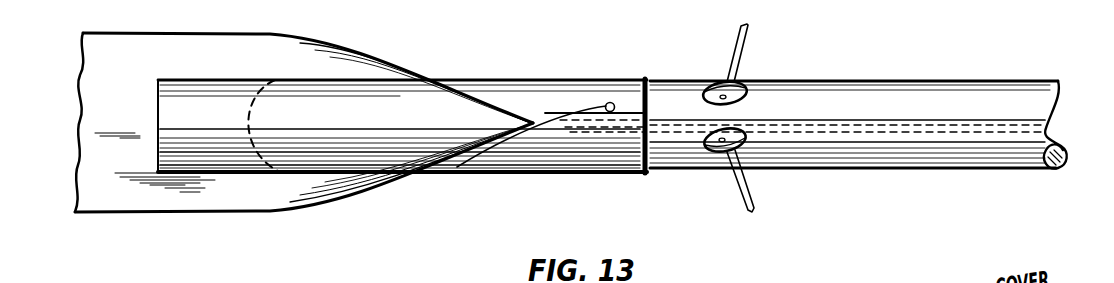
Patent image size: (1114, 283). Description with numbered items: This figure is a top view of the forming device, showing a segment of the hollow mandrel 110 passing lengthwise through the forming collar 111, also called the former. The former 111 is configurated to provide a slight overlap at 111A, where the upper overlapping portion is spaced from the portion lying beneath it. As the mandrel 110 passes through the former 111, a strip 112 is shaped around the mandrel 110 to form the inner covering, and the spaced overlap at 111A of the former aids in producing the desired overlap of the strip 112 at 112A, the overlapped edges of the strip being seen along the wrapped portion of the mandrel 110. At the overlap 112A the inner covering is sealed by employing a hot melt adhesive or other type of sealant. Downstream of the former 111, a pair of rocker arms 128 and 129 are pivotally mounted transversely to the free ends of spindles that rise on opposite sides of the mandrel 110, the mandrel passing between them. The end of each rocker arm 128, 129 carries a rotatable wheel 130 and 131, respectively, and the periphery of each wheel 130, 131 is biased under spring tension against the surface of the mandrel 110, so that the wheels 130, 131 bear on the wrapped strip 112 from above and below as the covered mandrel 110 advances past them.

The hollow mandrel 110 is at (1063, 150).
The forming collar 111 is at (587, 85).
The overlap of former 111A is at (607, 111).
The strip 112 is at (115, 212).
The overlap of strip 112A is at (882, 115).
The rocker arm 128 is at (731, 68).
The rocker arm 129 is at (748, 187).
The rotatable wheel 130 is at (750, 82).
The rotatable wheel 131 is at (713, 178).